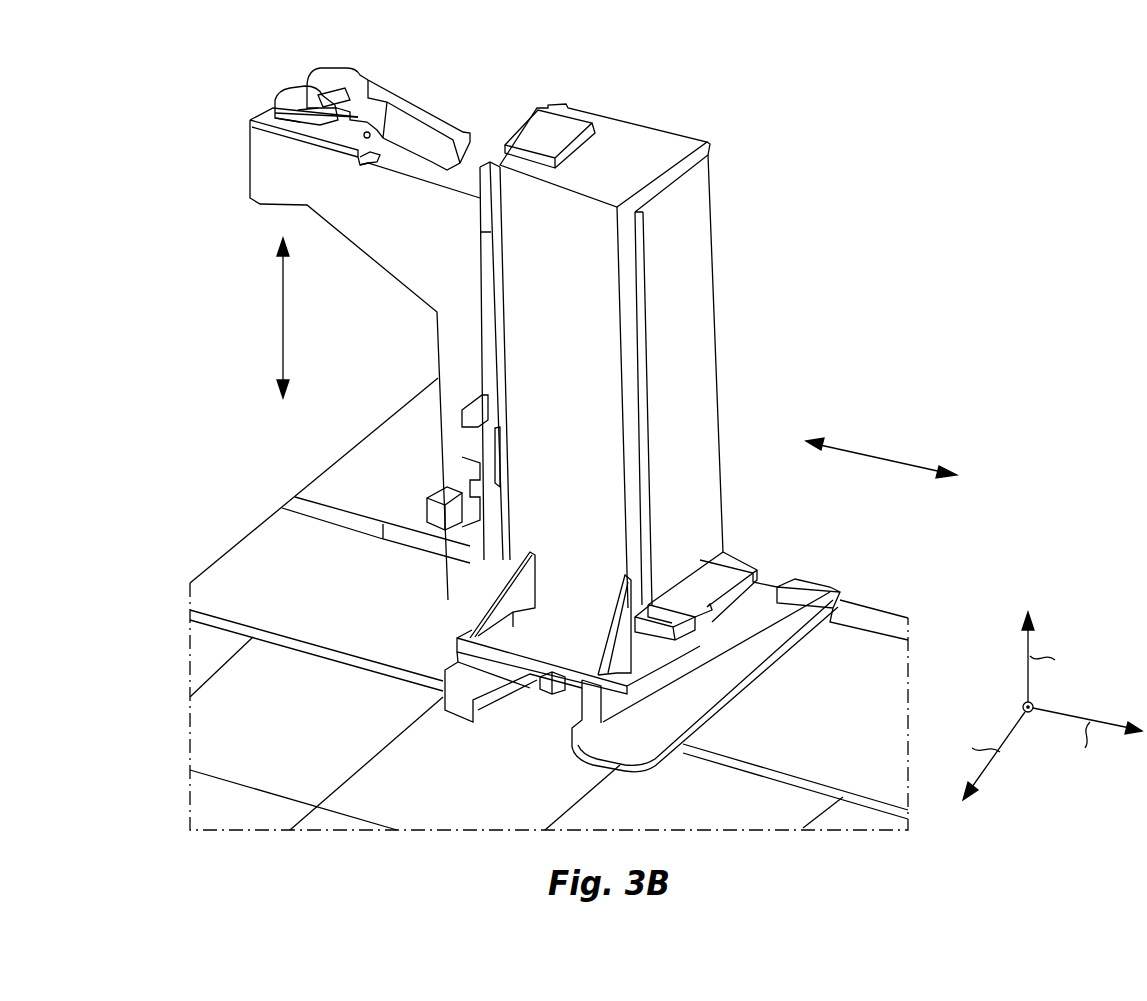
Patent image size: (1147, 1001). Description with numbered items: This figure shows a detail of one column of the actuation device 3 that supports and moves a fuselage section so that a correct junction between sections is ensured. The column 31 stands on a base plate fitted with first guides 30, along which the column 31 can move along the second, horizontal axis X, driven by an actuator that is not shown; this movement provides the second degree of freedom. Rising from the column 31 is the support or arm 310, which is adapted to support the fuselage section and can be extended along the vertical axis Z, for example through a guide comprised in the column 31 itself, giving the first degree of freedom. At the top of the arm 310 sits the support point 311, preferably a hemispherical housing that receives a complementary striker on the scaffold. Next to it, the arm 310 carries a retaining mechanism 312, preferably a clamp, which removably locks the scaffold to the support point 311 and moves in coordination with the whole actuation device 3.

The actuation device 3 is at (875, 106).
The first guides 30 is at (247, 567).
The column 31 is at (762, 303).
The support or arm 310 is at (268, 177).
The support point 311 is at (280, 96).
The retaining mechanism 312 is at (338, 77).